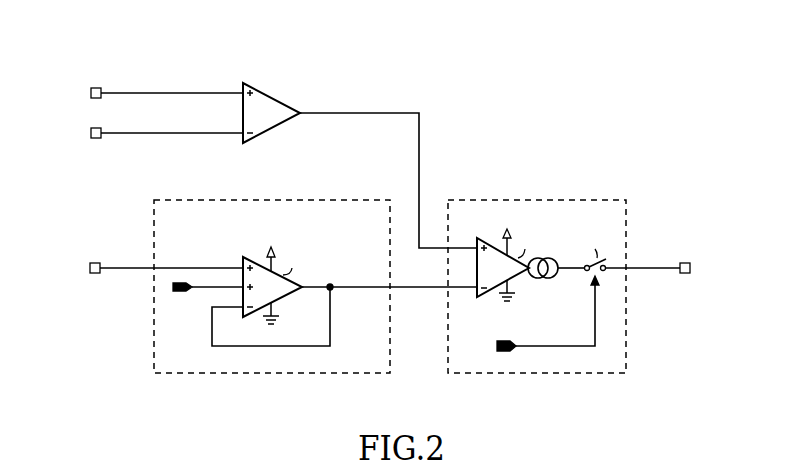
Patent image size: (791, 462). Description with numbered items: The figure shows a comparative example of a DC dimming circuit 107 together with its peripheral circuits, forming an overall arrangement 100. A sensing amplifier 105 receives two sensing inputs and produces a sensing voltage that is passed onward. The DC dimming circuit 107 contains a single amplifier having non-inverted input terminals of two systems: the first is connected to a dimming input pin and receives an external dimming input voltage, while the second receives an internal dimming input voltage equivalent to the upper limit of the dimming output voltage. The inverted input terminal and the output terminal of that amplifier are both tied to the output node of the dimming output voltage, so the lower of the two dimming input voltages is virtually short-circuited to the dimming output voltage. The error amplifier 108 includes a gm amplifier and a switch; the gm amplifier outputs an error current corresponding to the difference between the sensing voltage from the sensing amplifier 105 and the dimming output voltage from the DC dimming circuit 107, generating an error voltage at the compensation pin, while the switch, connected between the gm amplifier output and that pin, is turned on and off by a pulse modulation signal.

The control circuit 100 is at (388, 219).
The sensing amplifier 105 is at (273, 98).
The DC dimming circuit 107 is at (273, 200).
The error amplifier 108 is at (538, 200).